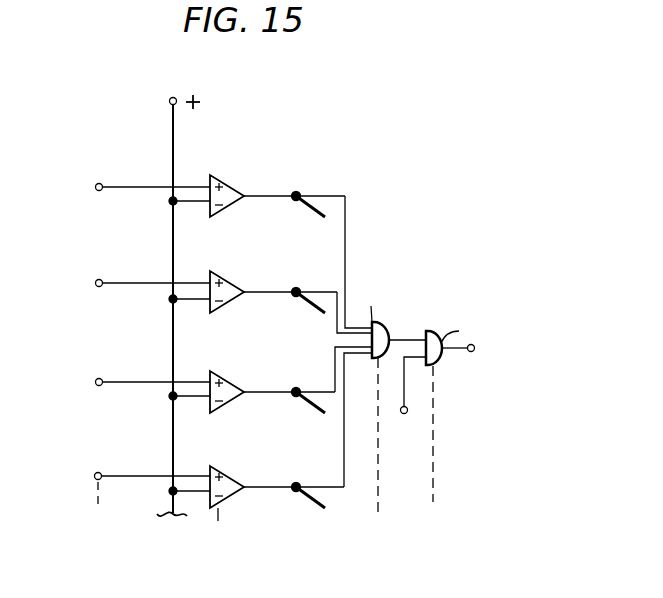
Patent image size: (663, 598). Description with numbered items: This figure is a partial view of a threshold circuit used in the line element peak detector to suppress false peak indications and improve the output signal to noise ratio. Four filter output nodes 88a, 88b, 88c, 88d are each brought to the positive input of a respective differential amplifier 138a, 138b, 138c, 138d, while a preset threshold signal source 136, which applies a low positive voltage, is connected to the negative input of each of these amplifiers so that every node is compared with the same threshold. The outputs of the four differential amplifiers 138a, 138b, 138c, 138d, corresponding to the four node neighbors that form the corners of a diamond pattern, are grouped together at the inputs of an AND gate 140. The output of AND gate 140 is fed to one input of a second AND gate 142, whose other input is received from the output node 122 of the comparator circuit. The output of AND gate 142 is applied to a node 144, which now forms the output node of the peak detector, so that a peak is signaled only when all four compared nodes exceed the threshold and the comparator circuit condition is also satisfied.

The preset threshold signal source 136 is at (173, 97).
The output node 88a is at (95, 187).
The output node 88b is at (95, 283).
The output node 88c is at (95, 382).
The output node 88d is at (94, 476).
The differential amplifier 138a is at (232, 185).
The differential amplifier 138b is at (232, 281).
The differential amplifier 138c is at (230, 382).
The differential amplifier 138d is at (230, 477).
The AND gate 140 is at (382, 326).
The AND gate 142 is at (436, 340).
The node 144 is at (471, 352).
The output node 122 is at (404, 414).